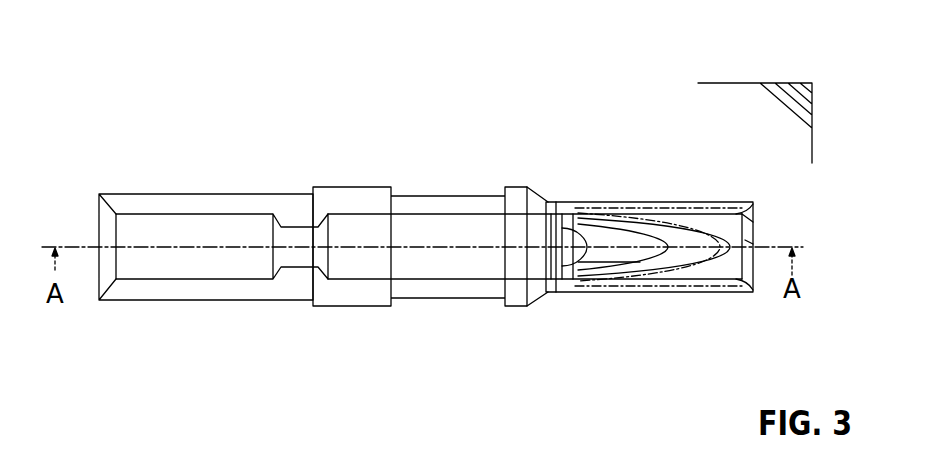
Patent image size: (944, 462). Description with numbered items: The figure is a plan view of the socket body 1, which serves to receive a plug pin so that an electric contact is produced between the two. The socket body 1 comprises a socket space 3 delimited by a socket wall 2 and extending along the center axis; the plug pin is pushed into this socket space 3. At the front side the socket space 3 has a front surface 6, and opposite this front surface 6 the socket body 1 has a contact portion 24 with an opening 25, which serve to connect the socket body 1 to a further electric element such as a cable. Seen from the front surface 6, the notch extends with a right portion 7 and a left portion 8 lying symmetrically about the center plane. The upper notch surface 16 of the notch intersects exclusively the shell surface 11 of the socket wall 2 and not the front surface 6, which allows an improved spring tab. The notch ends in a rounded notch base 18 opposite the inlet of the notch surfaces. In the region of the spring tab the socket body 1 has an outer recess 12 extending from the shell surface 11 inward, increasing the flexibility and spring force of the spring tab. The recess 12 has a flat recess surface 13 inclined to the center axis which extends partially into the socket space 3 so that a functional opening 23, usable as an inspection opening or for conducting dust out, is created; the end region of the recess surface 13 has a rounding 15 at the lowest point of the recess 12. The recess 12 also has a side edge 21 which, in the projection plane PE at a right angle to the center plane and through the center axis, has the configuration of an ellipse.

The socket body 1 is at (445, 196).
The socket wall 2 is at (742, 287).
The socket space 3 is at (753, 241).
The front surface 6 is at (753, 225).
The right portion 7 is at (709, 210).
The left portion 8 is at (637, 262).
The shell surface 11 is at (717, 287).
The outer recess 12 is at (590, 233).
The recess surface 13 is at (605, 233).
The rounding 15 is at (561, 230).
The upper notch surface 16 is at (603, 262).
The notch base 18 is at (562, 282).
The side edge 21 is at (643, 232).
The functional opening 23 is at (546, 203).
The contact portion 24 is at (241, 203).
The opening 25 is at (233, 288).
The projection plane PE is at (733, 83).